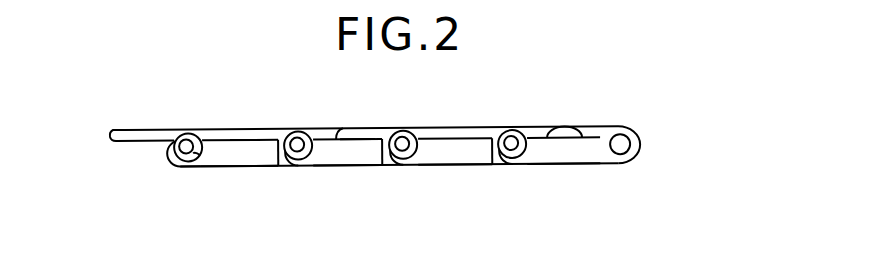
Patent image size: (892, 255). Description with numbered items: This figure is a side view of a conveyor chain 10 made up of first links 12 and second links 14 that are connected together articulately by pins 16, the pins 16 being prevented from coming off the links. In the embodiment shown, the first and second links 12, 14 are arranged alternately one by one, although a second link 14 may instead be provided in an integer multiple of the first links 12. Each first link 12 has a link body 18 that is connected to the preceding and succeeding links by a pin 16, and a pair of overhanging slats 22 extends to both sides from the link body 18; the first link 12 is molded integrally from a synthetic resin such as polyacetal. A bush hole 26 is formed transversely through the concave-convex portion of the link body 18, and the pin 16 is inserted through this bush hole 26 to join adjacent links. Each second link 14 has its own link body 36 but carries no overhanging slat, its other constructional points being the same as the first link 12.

The conveyor chain 10 is at (647, 121).
The first link 12 is at (200, 170).
The second link 14 is at (320, 169).
The pin 16 is at (175, 155).
The link body 18 is at (242, 152).
The overhanging slat 22 is at (142, 137).
The bush hole 26 is at (190, 137).
The link body 36 is at (360, 153).